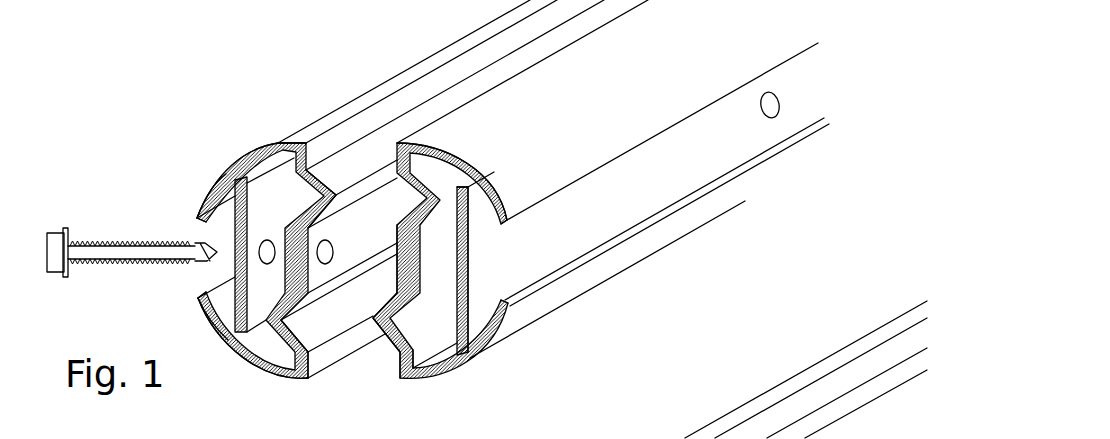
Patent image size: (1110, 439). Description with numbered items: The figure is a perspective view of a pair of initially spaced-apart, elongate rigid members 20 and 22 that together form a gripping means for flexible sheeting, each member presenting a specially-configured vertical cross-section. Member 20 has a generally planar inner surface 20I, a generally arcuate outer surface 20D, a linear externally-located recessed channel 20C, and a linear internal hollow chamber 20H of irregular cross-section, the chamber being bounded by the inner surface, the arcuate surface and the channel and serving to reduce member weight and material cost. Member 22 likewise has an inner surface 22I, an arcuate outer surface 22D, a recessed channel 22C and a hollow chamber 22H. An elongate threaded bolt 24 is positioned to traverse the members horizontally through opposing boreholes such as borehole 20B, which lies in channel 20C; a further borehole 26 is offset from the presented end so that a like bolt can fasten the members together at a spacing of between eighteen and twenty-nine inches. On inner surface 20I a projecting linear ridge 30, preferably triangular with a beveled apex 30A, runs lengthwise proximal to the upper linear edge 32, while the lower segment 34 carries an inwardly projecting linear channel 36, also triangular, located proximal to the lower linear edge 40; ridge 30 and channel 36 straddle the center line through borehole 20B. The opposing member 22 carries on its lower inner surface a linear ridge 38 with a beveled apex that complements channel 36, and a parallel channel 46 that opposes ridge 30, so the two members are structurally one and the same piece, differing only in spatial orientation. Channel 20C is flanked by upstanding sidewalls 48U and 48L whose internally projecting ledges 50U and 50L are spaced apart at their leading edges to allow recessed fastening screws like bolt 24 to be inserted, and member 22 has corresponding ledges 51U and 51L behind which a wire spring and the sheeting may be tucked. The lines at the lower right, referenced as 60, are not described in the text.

The elongate rigid member 20 is at (411, 49).
The arcuate outer surface 20D is at (236, 162).
The inner surface 20I is at (320, 206).
The hollow chamber 20H is at (257, 290).
The recessed channel 20C is at (200, 233).
The borehole 20B is at (334, 254).
The linear ridge 30 is at (278, 146).
The apex of ridge 30A is at (341, 202).
The upper linear edge 32 is at (367, 120).
The upper upstanding sidewall 48U is at (216, 175).
The upper internally projecting ledge 50U is at (202, 209).
The lower upstanding sidewall 48L is at (203, 297).
The lower internally projecting ledge 50L is at (205, 312).
The linear channel 36 is at (300, 340).
The lower linear edge 40 is at (317, 343).
The elongate rigid member 22 is at (620, 103).
The recessed channel 22C is at (493, 236).
The arcuate outer surface 22D is at (603, 260).
The hollow chamber 22H is at (434, 256).
The inner surface 22I is at (380, 272).
The channel 46 is at (449, 172).
The upper internally projecting ledge 51U is at (512, 217).
The lower internally projecting ledge 51L is at (512, 304).
The lower segment of inner surface 34 is at (369, 333).
The lower edge ridge 38 is at (419, 331).
The borehole 26 is at (762, 116).
The threaded bolt 24 is at (100, 243).
The panel 60 is at (633, 438).